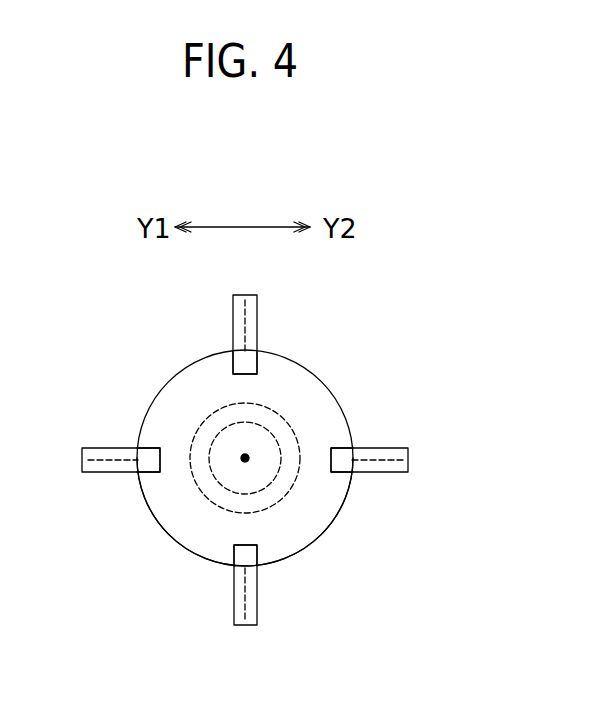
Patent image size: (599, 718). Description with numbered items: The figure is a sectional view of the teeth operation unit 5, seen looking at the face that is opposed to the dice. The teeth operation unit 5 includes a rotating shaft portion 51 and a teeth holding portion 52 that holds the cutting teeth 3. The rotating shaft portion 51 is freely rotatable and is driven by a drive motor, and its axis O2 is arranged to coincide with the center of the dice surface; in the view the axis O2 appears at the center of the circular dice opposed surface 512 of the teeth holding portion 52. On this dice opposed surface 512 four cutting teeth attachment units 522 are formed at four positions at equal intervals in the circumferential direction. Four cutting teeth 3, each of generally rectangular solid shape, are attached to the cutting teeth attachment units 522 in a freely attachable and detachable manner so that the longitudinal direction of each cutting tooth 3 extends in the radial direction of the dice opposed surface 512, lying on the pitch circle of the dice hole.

The cutting teeth 3 is at (233, 340).
The teeth operation unit 5 is at (253, 457).
The rotating shaft portion 51 is at (281, 416).
The dice opposed surface 512 is at (295, 522).
The teeth holding portion 52 is at (320, 378).
The cutting teeth attachment unit 522 is at (257, 363).
The axis of the rotating shaft portion O2 is at (244, 459).